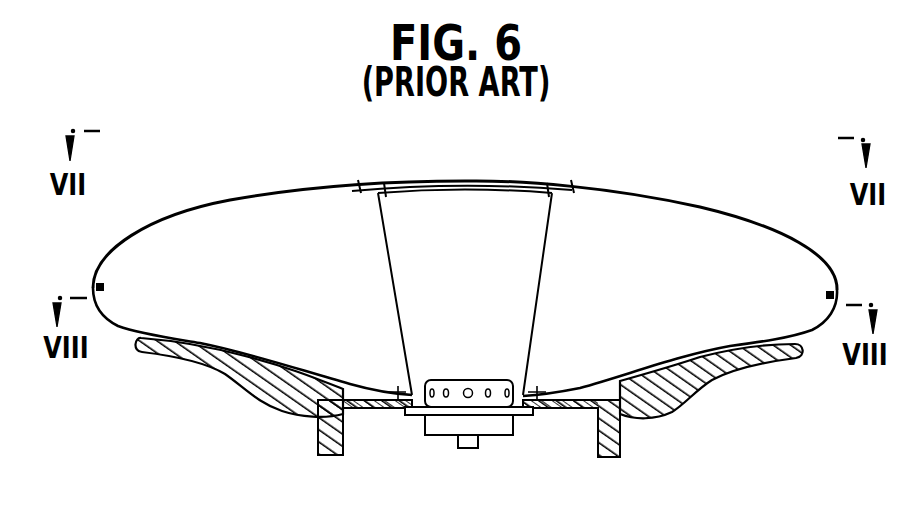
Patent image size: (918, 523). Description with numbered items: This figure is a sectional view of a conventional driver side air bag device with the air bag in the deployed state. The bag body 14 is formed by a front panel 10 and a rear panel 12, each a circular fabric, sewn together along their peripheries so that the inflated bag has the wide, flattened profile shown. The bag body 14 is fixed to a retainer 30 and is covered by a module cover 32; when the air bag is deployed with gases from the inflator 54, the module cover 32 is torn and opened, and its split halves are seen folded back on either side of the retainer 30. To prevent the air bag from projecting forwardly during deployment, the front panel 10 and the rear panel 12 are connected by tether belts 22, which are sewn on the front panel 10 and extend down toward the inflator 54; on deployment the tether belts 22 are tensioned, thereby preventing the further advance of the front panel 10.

The front panel 10 is at (256, 195).
The rear panel 12 is at (127, 334).
The bag body 14 is at (655, 180).
The tether belts 22 is at (393, 283).
The retainer 30 is at (380, 409).
The module cover 32 is at (231, 377).
The inflator 54 is at (508, 442).